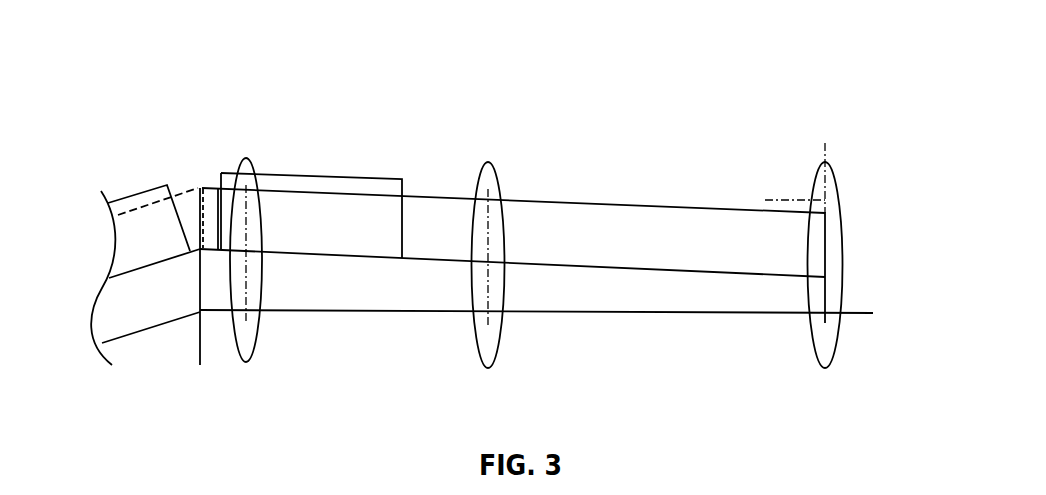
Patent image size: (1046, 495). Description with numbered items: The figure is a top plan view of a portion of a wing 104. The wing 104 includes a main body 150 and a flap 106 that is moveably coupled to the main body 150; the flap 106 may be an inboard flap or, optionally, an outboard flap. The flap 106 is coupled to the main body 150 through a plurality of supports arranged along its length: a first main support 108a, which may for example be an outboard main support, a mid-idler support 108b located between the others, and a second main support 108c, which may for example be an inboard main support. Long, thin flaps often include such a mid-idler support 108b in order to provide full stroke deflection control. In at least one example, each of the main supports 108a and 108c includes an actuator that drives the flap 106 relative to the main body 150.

The wing 104 is at (98, 161).
The flap 106 is at (395, 313).
The first main support 108a is at (245, 297).
The mid-idler support 108b is at (485, 300).
The second main support 108c is at (827, 192).
The main body 150 is at (720, 110).